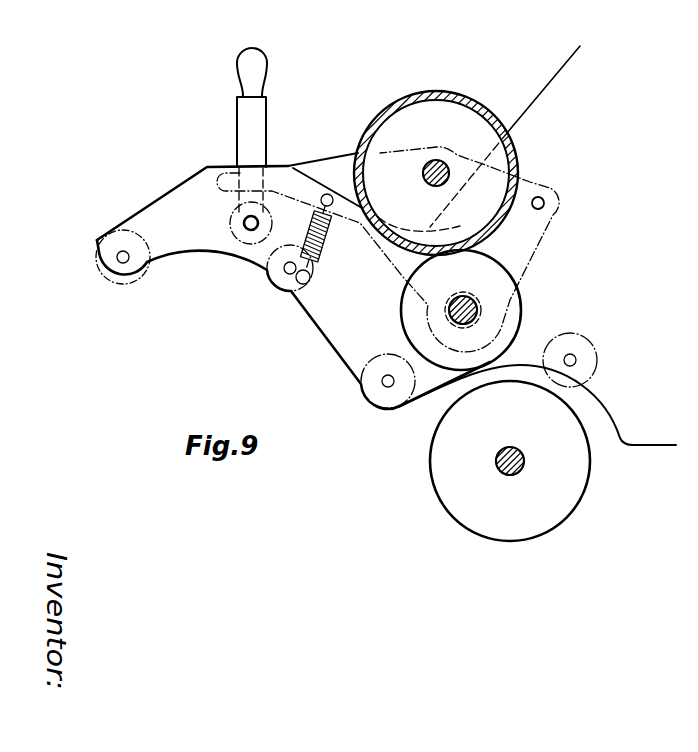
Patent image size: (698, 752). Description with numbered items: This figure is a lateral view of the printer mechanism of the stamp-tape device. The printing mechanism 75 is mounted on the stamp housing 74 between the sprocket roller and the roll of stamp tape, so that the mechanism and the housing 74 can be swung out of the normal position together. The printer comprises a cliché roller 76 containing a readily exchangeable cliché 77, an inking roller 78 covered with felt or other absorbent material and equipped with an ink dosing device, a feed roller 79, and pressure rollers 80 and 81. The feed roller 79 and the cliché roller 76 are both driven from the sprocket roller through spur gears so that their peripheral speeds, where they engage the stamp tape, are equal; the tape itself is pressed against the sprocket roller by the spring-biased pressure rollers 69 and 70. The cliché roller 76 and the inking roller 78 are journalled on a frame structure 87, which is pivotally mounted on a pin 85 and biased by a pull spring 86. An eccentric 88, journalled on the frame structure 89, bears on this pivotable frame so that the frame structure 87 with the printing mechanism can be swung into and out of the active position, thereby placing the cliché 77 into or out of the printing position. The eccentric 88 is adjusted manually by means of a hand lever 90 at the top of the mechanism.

The pressure roller 69 is at (123, 284).
The pressure roller 70 is at (272, 288).
The stamp housing 74 is at (662, 434).
The printing mechanism 75 is at (495, 244).
The cliché roller 76 is at (513, 310).
The cliché 77 is at (463, 310).
The inking roller 78 is at (470, 105).
The feed roller 79 is at (589, 481).
The pressure roller 80 is at (378, 404).
The pressure roller 81 is at (597, 358).
The pin 85 is at (549, 199).
The pull spring 86 is at (323, 248).
The frame structure 87 is at (318, 156).
The eccentric 88 is at (231, 230).
The frame structure 89 is at (190, 180).
The hand lever 90 is at (268, 68).